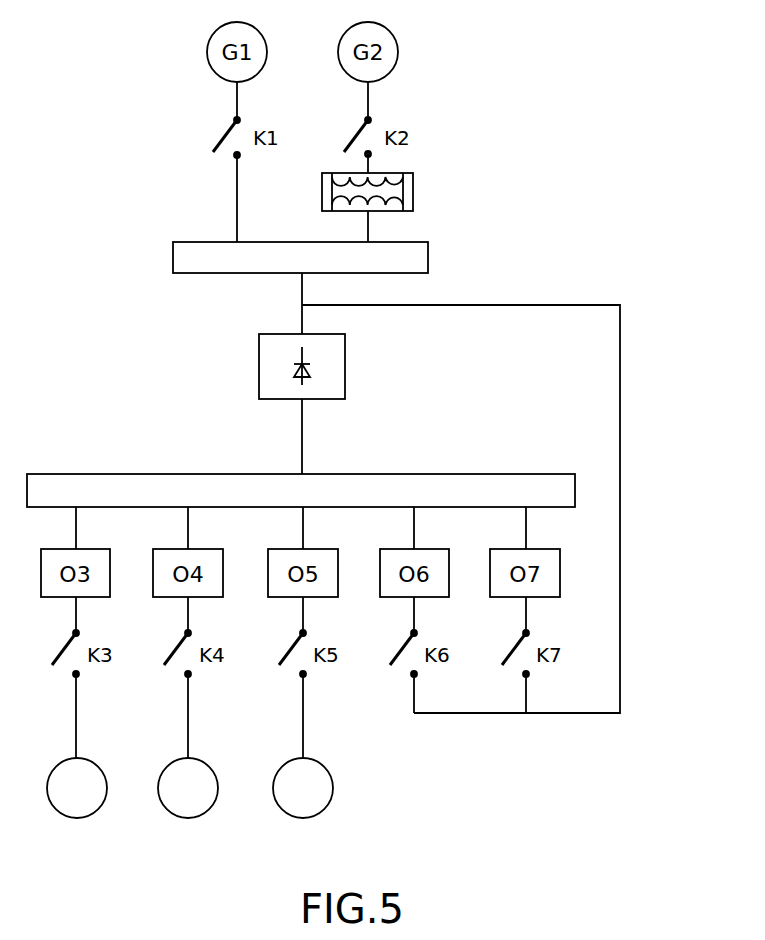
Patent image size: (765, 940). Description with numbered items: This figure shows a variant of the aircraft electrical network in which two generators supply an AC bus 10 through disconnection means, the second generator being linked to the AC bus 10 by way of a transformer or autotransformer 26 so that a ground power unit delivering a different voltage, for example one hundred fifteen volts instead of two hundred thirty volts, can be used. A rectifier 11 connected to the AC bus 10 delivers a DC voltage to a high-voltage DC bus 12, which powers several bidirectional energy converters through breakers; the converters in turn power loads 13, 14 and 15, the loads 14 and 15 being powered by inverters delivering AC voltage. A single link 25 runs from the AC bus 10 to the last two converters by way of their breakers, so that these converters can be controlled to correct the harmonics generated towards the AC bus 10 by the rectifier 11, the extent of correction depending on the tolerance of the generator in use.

The AC bus 10 is at (428, 254).
The rectifier 11 is at (259, 363).
The high-voltage DC bus 12 is at (408, 474).
The load 13 is at (77, 746).
The load 14 is at (188, 746).
The load 15 is at (303, 746).
The link 25 is at (575, 305).
The transformer or autotransformer 26 is at (413, 192).